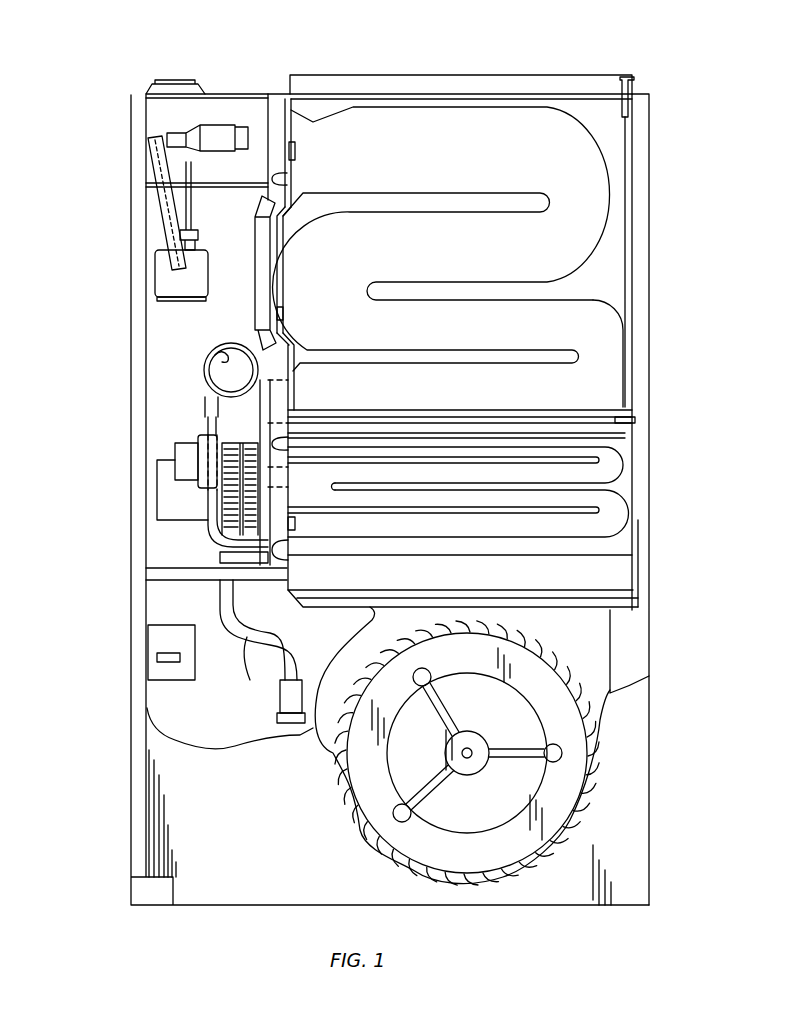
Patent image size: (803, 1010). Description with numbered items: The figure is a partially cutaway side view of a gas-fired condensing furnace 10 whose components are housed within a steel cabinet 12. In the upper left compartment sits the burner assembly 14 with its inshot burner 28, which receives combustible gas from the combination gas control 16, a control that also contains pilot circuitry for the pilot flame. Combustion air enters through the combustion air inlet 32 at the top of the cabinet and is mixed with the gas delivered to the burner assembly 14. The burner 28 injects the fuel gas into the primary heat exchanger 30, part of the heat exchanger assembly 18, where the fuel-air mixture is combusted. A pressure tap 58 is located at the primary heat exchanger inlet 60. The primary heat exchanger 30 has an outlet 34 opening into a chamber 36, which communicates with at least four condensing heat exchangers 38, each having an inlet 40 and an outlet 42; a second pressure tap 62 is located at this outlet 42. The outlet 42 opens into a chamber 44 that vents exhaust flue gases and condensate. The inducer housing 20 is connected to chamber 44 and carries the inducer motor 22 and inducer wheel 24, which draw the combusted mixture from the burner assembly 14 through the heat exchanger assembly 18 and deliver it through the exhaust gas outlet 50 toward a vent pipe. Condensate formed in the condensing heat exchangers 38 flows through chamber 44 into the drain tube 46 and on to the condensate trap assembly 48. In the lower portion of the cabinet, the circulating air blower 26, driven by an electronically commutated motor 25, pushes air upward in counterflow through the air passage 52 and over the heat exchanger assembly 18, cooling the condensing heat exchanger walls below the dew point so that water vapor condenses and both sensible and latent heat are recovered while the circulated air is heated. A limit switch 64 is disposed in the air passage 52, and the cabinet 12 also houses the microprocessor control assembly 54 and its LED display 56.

The condensing furnace 10 is at (118, 76).
The steel cabinet 12 is at (650, 122).
The burner assembly 14 is at (221, 92).
The combination gas control 16 is at (167, 305).
The heat exchanger assembly 18 is at (632, 428).
The inducer housing 20 is at (222, 546).
The inducer motor 22 is at (178, 458).
The inducer wheel 24 is at (228, 496).
The electronically commutated motor 25 is at (500, 800).
The circulating air blower 26 is at (600, 647).
The inshot burner 28 is at (235, 133).
The primary heat exchanger 30 is at (483, 164).
The combustion air inlet 32 is at (200, 78).
The outlet 34 is at (283, 372).
The chamber 36 is at (283, 405).
The condensing heat exchanger 38 is at (617, 463).
The inlet 40 is at (290, 445).
The outlet 42 is at (290, 565).
The chamber 44 is at (300, 497).
The drain tube 46 is at (258, 642).
The condensate trap assembly 48 is at (287, 715).
The exhaust gas outlet 50 is at (214, 348).
The air passage 52 is at (605, 273).
The microprocessor control assembly 54 is at (147, 618).
The LED display 56 is at (172, 664).
The pressure tap 58 is at (298, 154).
The primary heat exchanger inlet 60 is at (285, 179).
The pressure tap 62 is at (296, 523).
The limit switch 64 is at (292, 308).